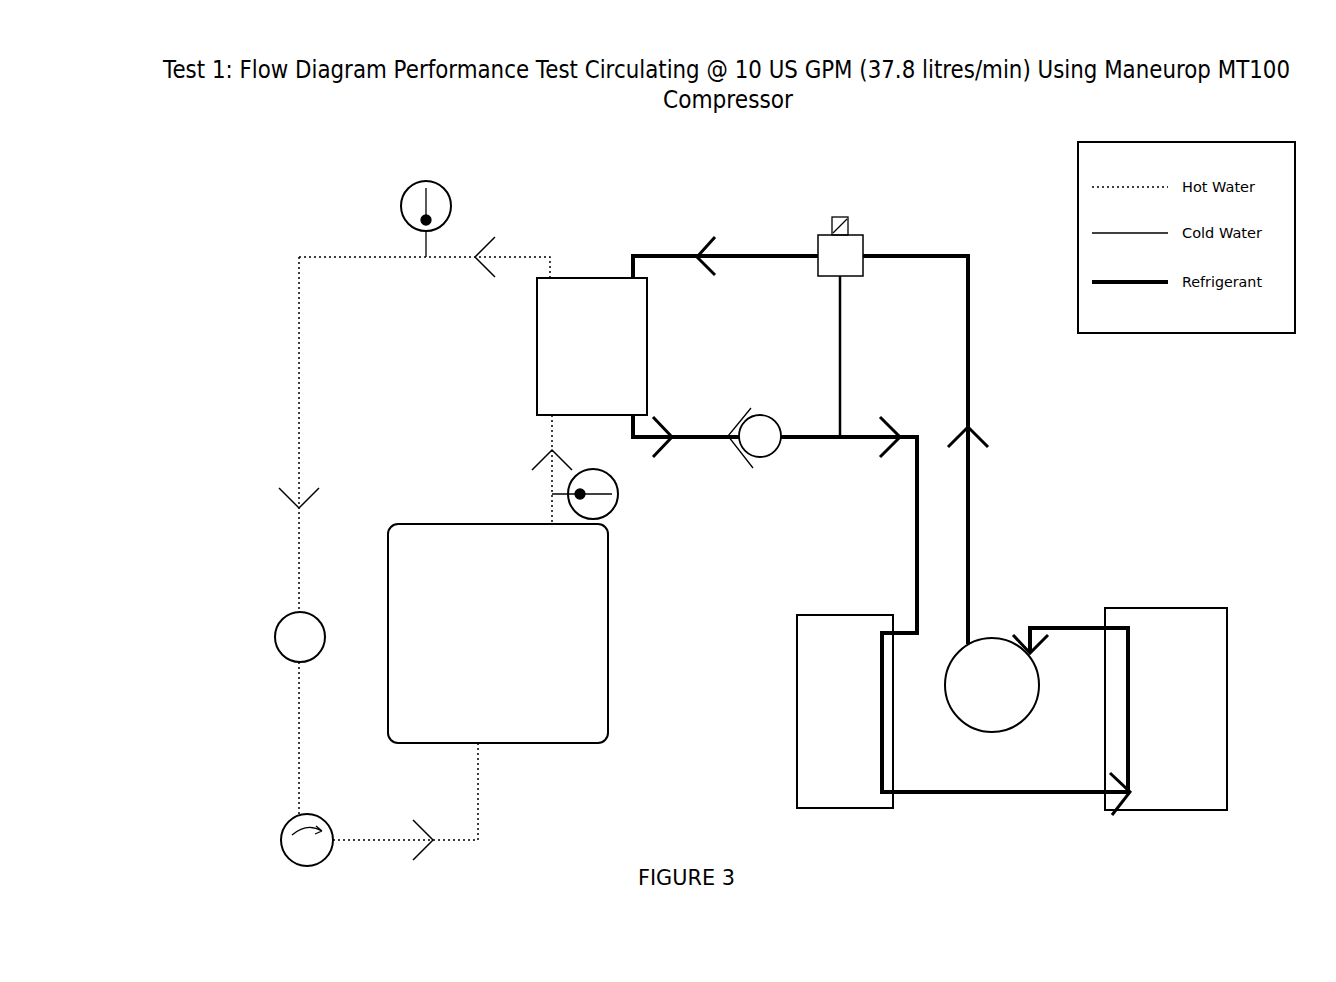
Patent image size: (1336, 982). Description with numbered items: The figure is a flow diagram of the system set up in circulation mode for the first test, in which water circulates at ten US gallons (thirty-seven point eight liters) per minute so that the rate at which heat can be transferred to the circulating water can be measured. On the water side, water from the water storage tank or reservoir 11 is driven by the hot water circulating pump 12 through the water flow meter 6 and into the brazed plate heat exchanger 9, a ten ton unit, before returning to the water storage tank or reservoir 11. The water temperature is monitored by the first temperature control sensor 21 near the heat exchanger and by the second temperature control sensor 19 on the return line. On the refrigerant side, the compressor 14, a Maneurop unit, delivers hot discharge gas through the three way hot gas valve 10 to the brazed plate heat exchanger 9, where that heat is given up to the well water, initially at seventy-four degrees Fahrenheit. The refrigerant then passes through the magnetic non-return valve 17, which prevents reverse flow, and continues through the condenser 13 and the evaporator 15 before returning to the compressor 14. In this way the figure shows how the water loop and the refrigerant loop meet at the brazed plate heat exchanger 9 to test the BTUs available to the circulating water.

The water flow meter 6 is at (275, 633).
The brazed plate heat exchanger 9 is at (592, 346).
The three way hot gas valve 10 is at (840, 212).
The water storage tank or reservoir 11 is at (498, 633).
The hot water circulating pump 12 is at (330, 824).
The condenser 13 is at (845, 711).
The compressor 14 is at (992, 685).
The evaporator 15 is at (1166, 709).
The magnetic non-return valve 17 is at (765, 410).
The temperature control sensor #2 19 is at (408, 180).
The temperature control sensor #1 21 is at (617, 507).